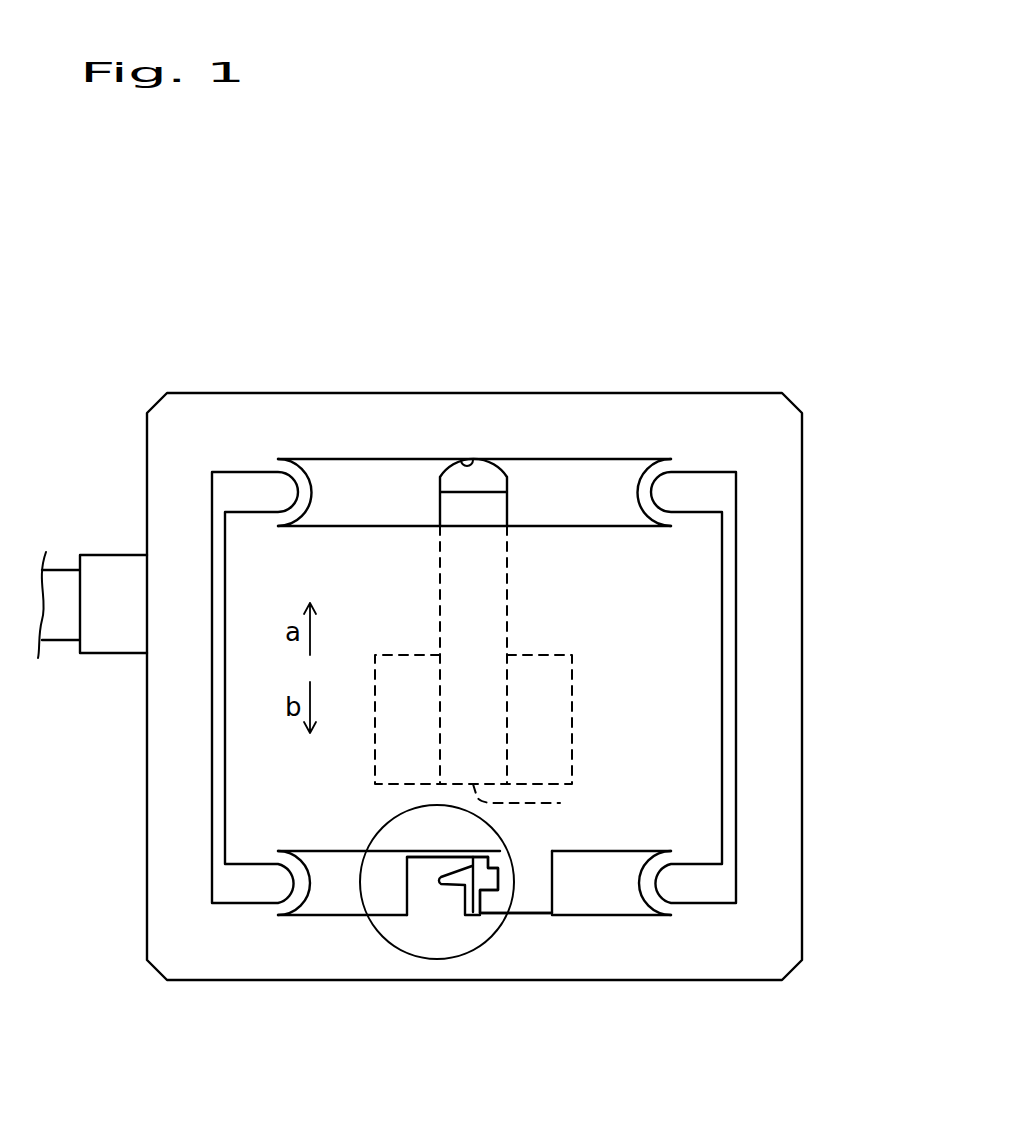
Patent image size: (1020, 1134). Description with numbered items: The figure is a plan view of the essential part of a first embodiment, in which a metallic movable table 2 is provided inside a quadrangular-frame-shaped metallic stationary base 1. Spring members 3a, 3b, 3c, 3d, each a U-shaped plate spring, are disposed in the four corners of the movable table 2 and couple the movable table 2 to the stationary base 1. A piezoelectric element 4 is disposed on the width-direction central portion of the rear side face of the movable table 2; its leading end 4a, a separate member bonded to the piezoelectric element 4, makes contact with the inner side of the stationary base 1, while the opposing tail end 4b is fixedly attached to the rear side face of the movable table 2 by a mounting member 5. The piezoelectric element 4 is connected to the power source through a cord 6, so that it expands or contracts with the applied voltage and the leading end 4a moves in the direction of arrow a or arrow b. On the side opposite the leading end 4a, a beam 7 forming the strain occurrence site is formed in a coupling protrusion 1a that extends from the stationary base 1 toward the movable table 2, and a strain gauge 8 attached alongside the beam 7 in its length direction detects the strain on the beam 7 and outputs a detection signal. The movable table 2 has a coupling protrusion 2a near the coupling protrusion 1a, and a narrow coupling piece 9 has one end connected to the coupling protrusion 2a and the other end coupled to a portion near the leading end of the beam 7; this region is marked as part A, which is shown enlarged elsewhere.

The stationary base 1 is at (695, 412).
The coupling protrusion 1a is at (427, 903).
The movable table 2 is at (707, 613).
The coupling protrusion 2a is at (541, 916).
The spring member 3a is at (300, 463).
The spring member 3b is at (646, 490).
The spring member 3c is at (297, 902).
The spring member 3d is at (650, 898).
The piezoelectric element 4 is at (452, 502).
The leading end 4a is at (462, 463).
The tail end 4b is at (560, 803).
The mounting member 5 is at (557, 733).
The cord 6 is at (65, 628).
The beam 7 is at (445, 867).
The strain gauge 8 is at (460, 858).
The coupling piece 9 is at (478, 893).
The part A is at (437, 960).